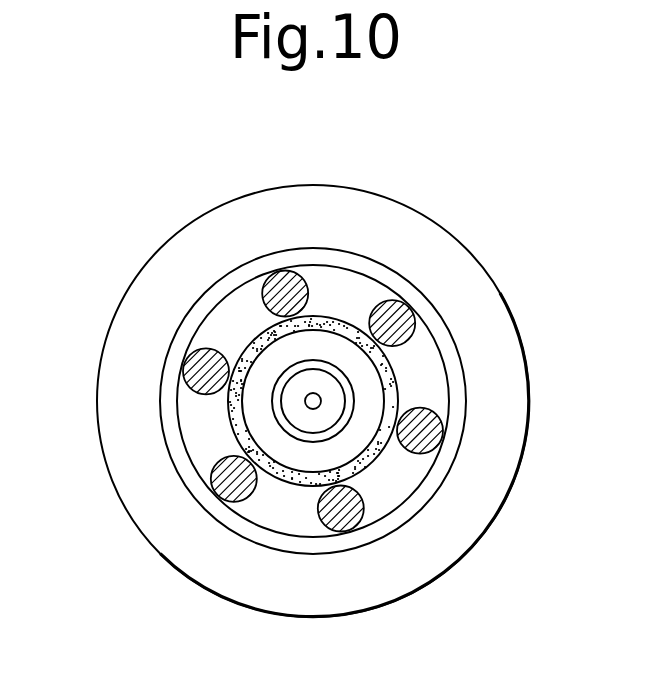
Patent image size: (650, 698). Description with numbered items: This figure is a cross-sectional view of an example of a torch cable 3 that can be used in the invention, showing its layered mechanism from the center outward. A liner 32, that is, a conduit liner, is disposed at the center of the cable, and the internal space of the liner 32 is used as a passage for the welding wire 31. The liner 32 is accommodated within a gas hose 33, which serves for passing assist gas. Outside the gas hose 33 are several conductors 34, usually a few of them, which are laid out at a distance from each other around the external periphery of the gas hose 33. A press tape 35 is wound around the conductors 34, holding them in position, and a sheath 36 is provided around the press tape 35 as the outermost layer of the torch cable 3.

The torch cable 3 is at (309, 362).
The welding wire 31 is at (306, 403).
The liner 32 is at (301, 436).
The gas hose 33 is at (371, 468).
The conductors 34 is at (425, 426).
The press tape 35 is at (167, 411).
The sheath 36 is at (186, 246).